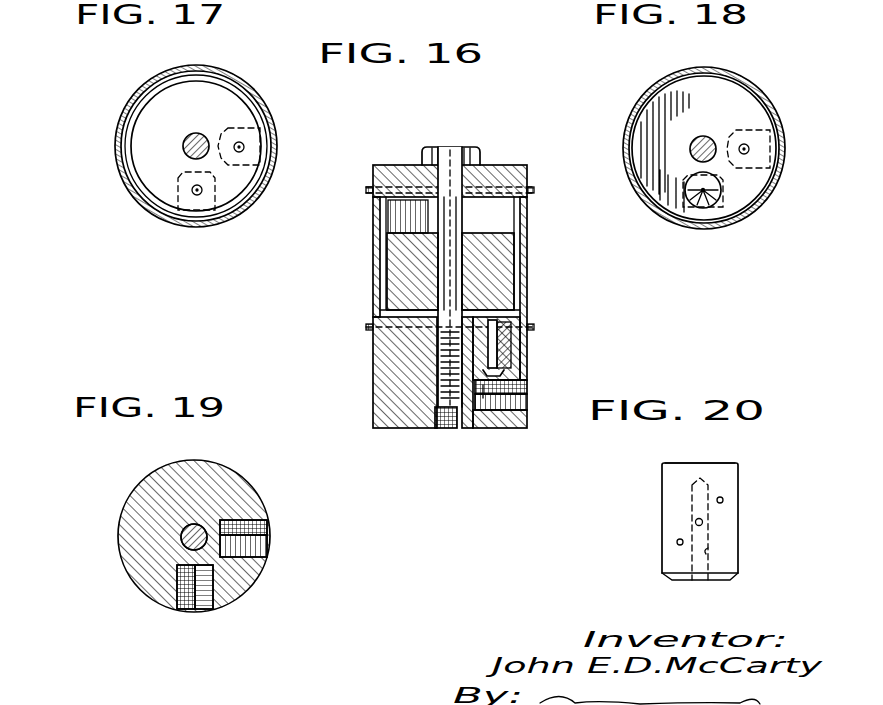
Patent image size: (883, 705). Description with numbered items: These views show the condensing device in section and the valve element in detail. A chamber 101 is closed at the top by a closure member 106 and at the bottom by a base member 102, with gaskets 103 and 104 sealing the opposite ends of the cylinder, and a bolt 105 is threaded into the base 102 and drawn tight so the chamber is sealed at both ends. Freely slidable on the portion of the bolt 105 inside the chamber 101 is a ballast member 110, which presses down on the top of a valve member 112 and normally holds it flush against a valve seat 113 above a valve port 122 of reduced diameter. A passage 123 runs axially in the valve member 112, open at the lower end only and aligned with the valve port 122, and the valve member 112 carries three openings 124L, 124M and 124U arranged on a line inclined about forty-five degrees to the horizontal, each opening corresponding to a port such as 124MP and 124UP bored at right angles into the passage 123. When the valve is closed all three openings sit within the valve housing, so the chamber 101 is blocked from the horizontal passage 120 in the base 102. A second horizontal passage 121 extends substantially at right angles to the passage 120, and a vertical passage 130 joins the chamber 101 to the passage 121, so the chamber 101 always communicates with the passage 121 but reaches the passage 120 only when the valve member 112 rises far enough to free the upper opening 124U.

In FIG. 17, the chamber 101 is at (128, 107).
In FIG. 18, the chamber 101 is at (638, 100).
In FIG. 16, the chamber 101 is at (525, 218).
In FIG. 16, the base member 102 is at (388, 347).
In FIG. 19, the base member 102 is at (247, 492).
In FIG. 17, the gasket 103 is at (125, 186).
In FIG. 18, the gasket 103 is at (752, 217).
In FIG. 16, the gasket 103 is at (372, 327).
In FIG. 16, the gasket 104 is at (373, 190).
In FIG. 17, the bolt 105 is at (183, 141).
In FIG. 18, the bolt 105 is at (708, 137).
In FIG. 16, the bolt 105 is at (442, 216).
In FIG. 19, the bolt 105 is at (183, 533).
In FIG. 16, the closure member 106 is at (508, 165).
In FIG. 17, the ballast member 110 is at (160, 100).
In FIG. 16, the ballast member 110 is at (507, 263).
In FIG. 17, the valve member 112 is at (182, 190).
In FIG. 18, the valve member 112 is at (683, 185).
In FIG. 20, the valve member 112 is at (740, 490).
In FIG. 16, the valve seat 113 is at (505, 376).
In FIG. 17, the passage 120 is at (256, 162).
In FIG. 18, the passage 120 is at (770, 125).
In FIG. 16, the passage 120 is at (432, 388).
In FIG. 19, the passage 120 is at (272, 525).
In FIG. 18, the horizontal passage 121 is at (688, 203).
In FIG. 16, the horizontal passage 121 is at (528, 412).
In FIG. 19, the horizontal passage 121 is at (197, 610).
In FIG. 16, the valve port 122 is at (490, 385).
In FIG. 17, the passage 123 is at (193, 197).
In FIG. 18, the passage 123 is at (725, 192).
In FIG. 16, the passage 123 is at (500, 356).
In FIG. 20, the passage 123 is at (710, 548).
In FIG. 18, the upper opening 124U is at (723, 205).
In FIG. 20, the upper opening 124U is at (722, 497).
In FIG. 18, the middle opening 124M is at (703, 208).
In FIG. 20, the middle opening 124M is at (696, 520).
In FIG. 18, the lower opening 124L is at (690, 200).
In FIG. 20, the lower opening 124L is at (678, 540).
In FIG. 16, the upper port 124UP is at (528, 314).
In FIG. 16, the middle port 124MP is at (500, 336).
In FIG. 17, the vertical passage 130 is at (240, 141).
In FIG. 18, the vertical passage 130 is at (749, 150).
In FIG. 16, the vertical passage 130 is at (440, 360).